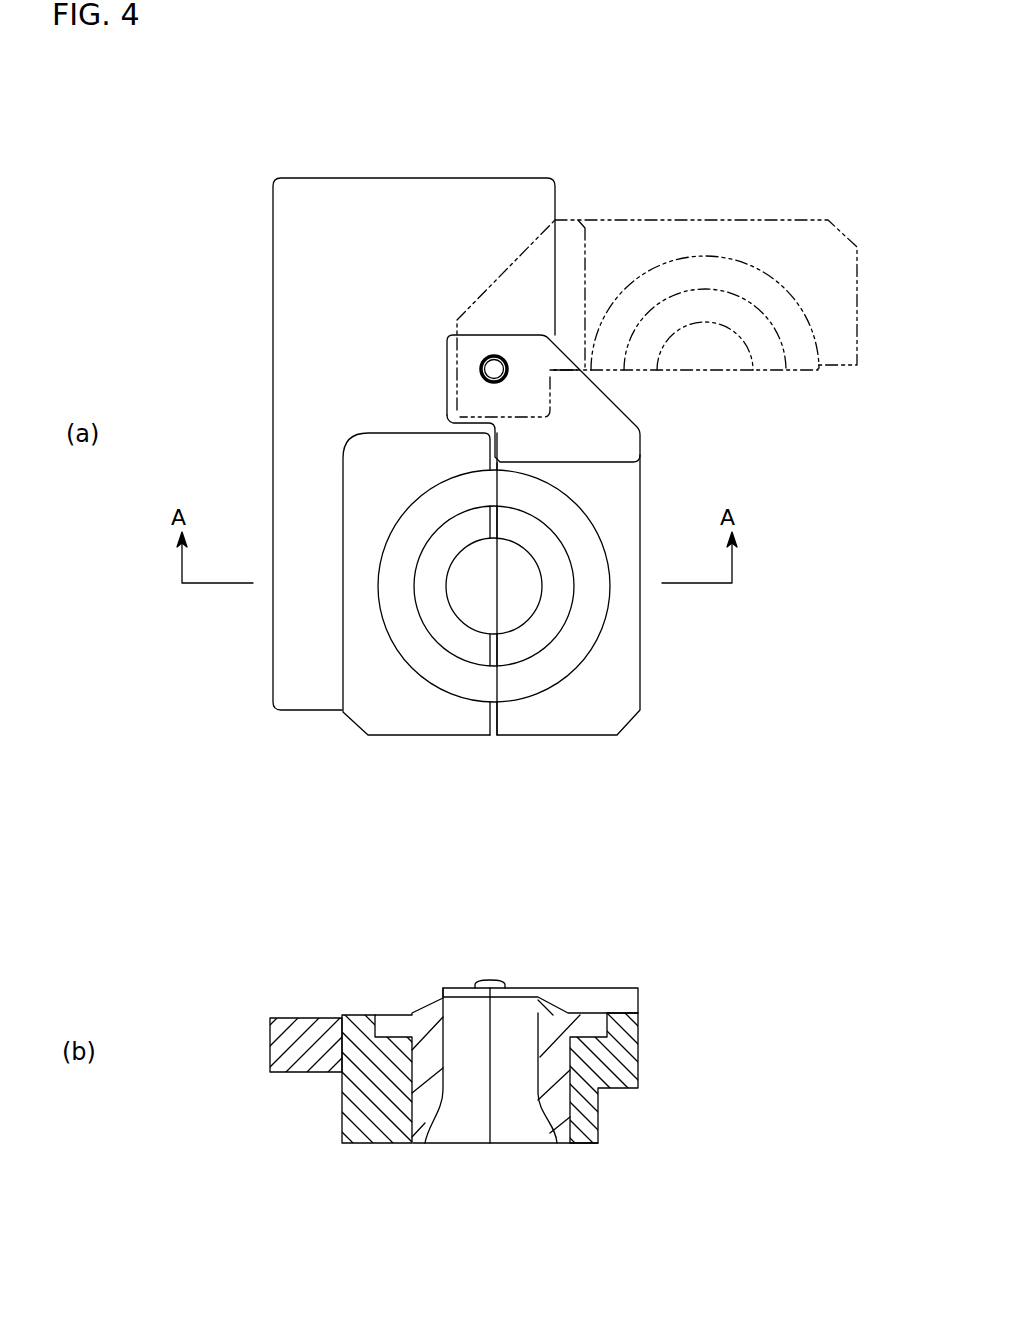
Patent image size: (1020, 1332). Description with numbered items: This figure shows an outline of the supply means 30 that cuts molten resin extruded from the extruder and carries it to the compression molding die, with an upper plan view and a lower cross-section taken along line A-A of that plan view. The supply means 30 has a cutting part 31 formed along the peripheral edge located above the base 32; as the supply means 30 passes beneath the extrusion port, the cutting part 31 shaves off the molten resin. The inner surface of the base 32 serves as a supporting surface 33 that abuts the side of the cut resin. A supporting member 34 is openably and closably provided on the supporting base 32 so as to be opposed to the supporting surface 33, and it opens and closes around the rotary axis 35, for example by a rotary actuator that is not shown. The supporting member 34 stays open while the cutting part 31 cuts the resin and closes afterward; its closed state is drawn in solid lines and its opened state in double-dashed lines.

The supply means 30 is at (476, 160).
The cutting part 31 is at (445, 582).
The base 32 is at (393, 713).
The supporting surface 33 is at (443, 1057).
The supporting member 34 is at (708, 235).
The rotary axis 35 is at (494, 356).